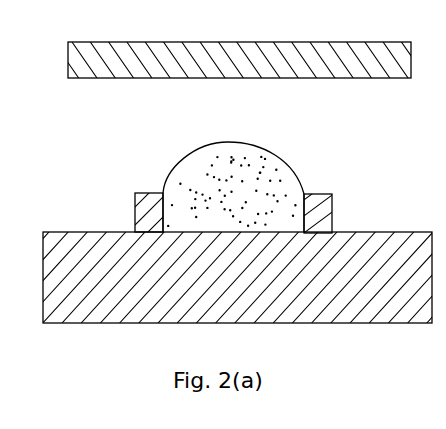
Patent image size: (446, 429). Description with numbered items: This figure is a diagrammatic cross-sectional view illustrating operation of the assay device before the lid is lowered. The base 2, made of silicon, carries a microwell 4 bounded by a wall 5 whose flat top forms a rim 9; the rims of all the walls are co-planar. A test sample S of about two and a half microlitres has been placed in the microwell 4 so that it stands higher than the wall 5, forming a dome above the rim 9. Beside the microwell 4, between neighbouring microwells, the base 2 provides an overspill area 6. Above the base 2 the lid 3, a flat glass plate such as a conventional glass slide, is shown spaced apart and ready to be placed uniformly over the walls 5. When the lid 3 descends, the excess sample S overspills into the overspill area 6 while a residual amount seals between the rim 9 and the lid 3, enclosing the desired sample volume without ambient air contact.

The lid 3 is at (72, 88).
The base 2 is at (79, 320).
The microwell 4 is at (134, 219).
The wall 5 is at (333, 213).
The rim 9 is at (152, 193).
The test sample S is at (237, 157).
The overspill area 6 is at (445, 208).